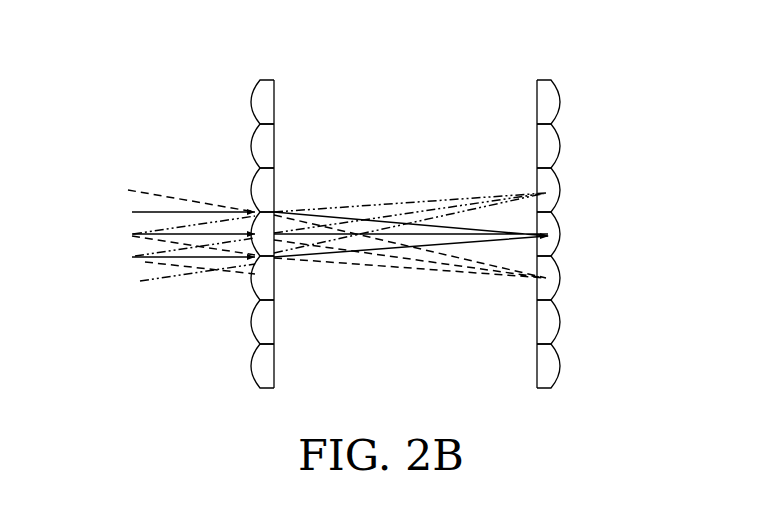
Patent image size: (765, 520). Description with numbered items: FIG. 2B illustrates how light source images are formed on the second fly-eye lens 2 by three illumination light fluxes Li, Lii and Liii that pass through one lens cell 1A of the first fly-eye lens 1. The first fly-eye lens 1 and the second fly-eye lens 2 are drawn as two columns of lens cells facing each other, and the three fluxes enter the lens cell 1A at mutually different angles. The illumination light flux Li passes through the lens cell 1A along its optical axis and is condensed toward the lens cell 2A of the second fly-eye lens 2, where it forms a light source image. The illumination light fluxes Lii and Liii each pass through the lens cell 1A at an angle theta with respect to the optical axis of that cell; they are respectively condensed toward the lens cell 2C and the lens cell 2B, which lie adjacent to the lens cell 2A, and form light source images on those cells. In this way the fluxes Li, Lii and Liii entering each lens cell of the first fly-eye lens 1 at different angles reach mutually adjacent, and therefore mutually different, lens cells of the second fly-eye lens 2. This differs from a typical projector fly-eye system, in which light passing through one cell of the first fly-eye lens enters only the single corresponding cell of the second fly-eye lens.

The first fly-eye lens 1 is at (243, 62).
The second fly-eye lens 2 is at (570, 62).
The lens cell of the first fly-eye lens 1A is at (263, 230).
The lens cell of the second fly-eye lens 2A is at (562, 234).
The lens cell of the second fly-eye lens 2B is at (560, 190).
The lens cell of the second fly-eye lens 2C is at (558, 278).
The illumination light flux Li is at (167, 212).
The illumination light flux Lii is at (172, 198).
The illumination light flux Liii is at (162, 281).